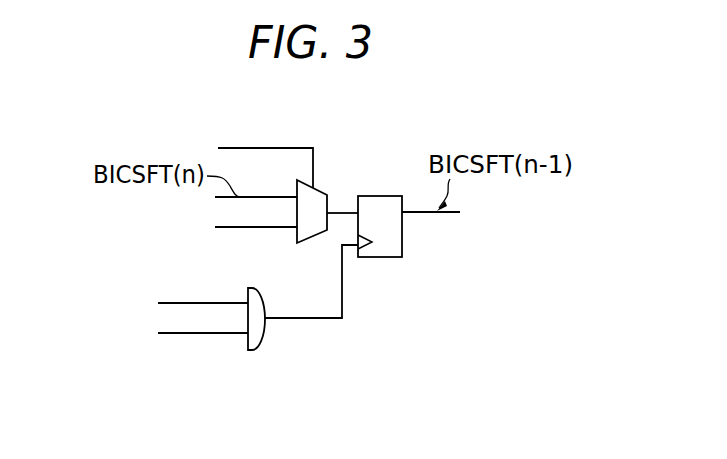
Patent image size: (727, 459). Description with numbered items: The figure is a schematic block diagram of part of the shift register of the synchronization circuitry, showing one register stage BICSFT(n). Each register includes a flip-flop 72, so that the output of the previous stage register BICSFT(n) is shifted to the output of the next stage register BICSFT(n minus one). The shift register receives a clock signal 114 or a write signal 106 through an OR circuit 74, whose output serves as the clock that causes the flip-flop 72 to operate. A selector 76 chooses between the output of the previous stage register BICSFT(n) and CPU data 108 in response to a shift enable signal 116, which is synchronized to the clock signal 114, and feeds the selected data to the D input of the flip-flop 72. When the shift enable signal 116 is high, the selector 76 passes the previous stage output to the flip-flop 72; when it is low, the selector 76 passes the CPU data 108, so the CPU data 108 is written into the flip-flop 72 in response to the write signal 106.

The flip-flop 72 is at (378, 196).
The OR circuit 74 is at (260, 344).
The selector 76 is at (322, 189).
The write signal 106 is at (192, 334).
The CPU data 108 is at (240, 228).
The clock signal 114 is at (195, 303).
The shift enable signal 116 is at (240, 148).